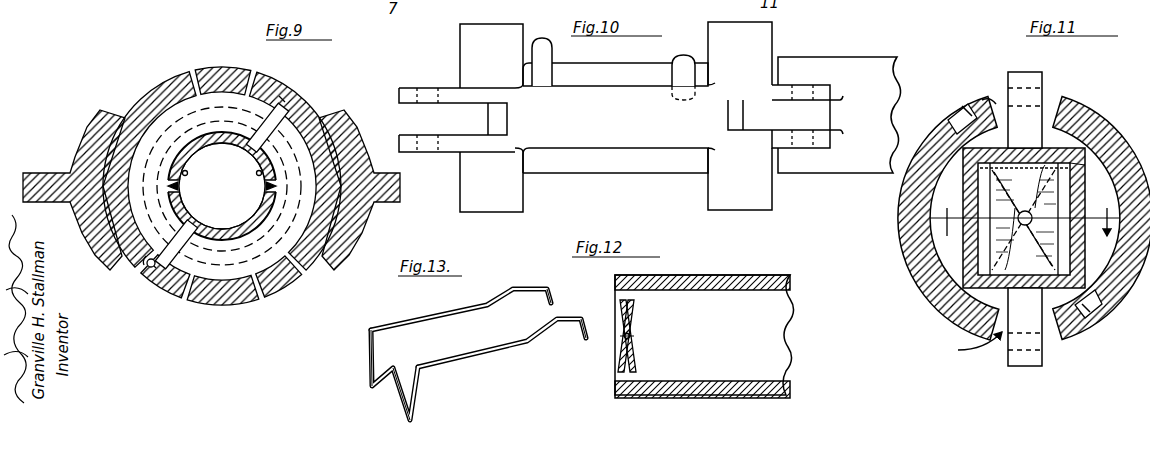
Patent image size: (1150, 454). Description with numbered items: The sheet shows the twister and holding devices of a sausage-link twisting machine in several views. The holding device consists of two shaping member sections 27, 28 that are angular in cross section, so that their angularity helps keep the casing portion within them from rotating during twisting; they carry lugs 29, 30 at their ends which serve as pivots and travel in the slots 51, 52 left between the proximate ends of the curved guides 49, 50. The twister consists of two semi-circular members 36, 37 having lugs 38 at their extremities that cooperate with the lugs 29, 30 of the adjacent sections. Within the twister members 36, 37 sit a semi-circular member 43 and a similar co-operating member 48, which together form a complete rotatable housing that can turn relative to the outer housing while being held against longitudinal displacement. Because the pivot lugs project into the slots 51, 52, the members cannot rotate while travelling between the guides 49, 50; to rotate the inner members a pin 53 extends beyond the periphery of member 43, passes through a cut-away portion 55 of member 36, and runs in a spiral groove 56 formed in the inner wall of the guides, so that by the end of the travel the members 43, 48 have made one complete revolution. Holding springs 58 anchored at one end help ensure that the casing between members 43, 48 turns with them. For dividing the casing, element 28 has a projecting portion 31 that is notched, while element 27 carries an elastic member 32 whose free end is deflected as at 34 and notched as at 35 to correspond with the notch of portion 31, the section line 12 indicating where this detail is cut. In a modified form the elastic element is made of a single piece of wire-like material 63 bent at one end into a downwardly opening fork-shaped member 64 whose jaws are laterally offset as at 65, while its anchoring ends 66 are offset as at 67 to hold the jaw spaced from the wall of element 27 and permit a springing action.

In FIG. 11, the section line 12- 12 is at (1025, 215).
In FIG. 10, the shaping member section 27 is at (860, 60).
In FIG. 11, the shaping member section 27 is at (1078, 165).
In FIG. 11, the shaping member section 28 is at (970, 262).
In FIG. 12, the shaping member section 28 is at (782, 275).
In FIG. 10, the lug 29 is at (806, 112).
In FIG. 11, the lug 29 is at (1042, 78).
In FIG. 11, the lug 30 is at (1015, 358).
In FIG. 11, the projecting portion 31 is at (1005, 262).
In FIG. 12, the projecting portion 31 is at (619, 304).
In FIG. 11, the elastic member 32 is at (1060, 163).
In FIG. 12, the elastic member 32 is at (634, 333).
In FIG. 11, the deflected portion 34 is at (1000, 207).
In FIG. 12, the deflected portion 34 is at (633, 310).
In FIG. 11, the notch 35 is at (1020, 216).
In FIG. 12, the notch 35 is at (624, 346).
In FIG. 9, the semi-circular twister member 36 is at (218, 70).
In FIG. 10, the semi-circular twister member 36 is at (613, 148).
In FIG. 9, the semi-circular twister member 37 is at (214, 302).
In FIG. 10, the lug 38 is at (420, 90).
In FIG. 9, the semi-circular rotatable member 43 is at (222, 186).
In FIG. 10, the semi-circular rotatable member 43 is at (611, 63).
In FIG. 9, the co-operating rotatable member 48 is at (230, 229).
In FIG. 9, the curved guide 49 is at (134, 108).
In FIG. 11, the curved guide 49 is at (940, 120).
In FIG. 9, the curved guide 50 is at (330, 110).
In FIG. 11, the curved guide 50 is at (1090, 142).
In FIG. 11, the slot 51 is at (992, 98).
In FIG. 11, the slot 52 is at (966, 345).
In FIG. 9, the pin 53 is at (290, 108).
In FIG. 10, the pin 53 is at (542, 48).
In FIG. 11, the pin 53 is at (966, 108).
In FIG. 9, the cut-away portion 55 is at (305, 270).
In FIG. 9, the spiral groove 56 is at (300, 120).
In FIG. 11, the spiral groove 56 is at (958, 112).
In FIG. 9, the holding spring 58 is at (242, 182).
In FIG. 13, the wire-like member 63 is at (444, 350).
In FIG. 13, the fork-shaped member 64 is at (371, 340).
In FIG. 13, the offset jaws 65 is at (393, 366).
In FIG. 13, the anchoring ends 66 is at (555, 302).
In FIG. 13, the offset 67 is at (520, 292).